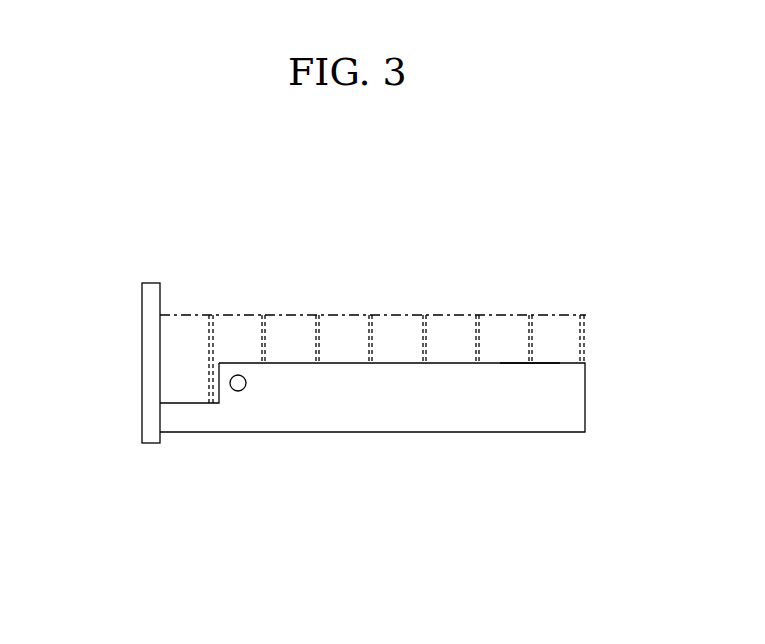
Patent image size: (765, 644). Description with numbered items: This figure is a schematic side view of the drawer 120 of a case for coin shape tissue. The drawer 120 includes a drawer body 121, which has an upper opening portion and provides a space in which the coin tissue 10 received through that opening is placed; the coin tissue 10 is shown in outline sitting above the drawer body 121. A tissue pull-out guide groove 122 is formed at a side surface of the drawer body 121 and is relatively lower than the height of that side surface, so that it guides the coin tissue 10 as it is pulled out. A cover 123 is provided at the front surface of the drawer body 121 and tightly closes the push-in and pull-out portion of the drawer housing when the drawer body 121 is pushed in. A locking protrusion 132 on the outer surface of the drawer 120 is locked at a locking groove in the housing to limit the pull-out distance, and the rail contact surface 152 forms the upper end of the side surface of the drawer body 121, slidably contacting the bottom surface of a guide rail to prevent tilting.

The coin tissue 10 is at (237, 315).
The drawer 120 is at (448, 235).
The drawer body 121 is at (407, 410).
The tissue pull-out guide groove 122 is at (190, 402).
The cover 123 is at (141, 304).
The locking protrusion 132 is at (236, 381).
The rail contact surface 152 is at (505, 363).